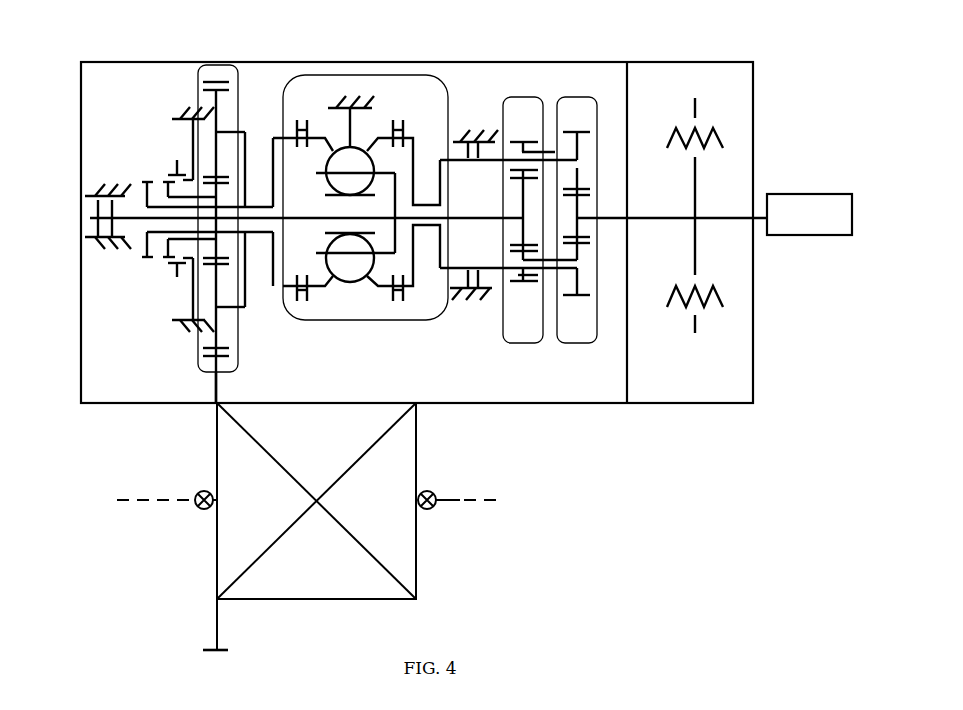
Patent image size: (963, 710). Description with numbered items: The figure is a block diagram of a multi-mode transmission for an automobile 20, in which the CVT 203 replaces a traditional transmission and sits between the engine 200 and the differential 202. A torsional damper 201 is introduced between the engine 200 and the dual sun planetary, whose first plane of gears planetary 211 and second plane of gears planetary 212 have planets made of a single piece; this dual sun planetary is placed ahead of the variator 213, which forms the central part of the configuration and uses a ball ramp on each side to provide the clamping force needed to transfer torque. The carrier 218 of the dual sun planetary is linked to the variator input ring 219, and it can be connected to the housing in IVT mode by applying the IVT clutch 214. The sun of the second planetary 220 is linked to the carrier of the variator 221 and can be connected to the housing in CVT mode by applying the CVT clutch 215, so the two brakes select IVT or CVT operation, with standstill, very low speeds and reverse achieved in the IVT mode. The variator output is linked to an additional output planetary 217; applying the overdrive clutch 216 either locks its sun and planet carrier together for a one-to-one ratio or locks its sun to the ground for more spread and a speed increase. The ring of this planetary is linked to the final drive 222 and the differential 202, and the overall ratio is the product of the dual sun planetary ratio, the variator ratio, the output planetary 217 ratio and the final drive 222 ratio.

The automobile 20 is at (617, 530).
The engine 200 is at (838, 193).
The torsional damper 201 is at (727, 61).
The differential 202 is at (294, 601).
The CVT 203 is at (376, 188).
The first plane of gears planetary 211 is at (557, 110).
The second plane of gears planetary 212 is at (502, 104).
The variator 213 is at (284, 104).
The IVT clutch 214 is at (463, 136).
The CVT clutch 215 is at (82, 216).
The overdrive clutch 216 is at (178, 160).
The output planetary 217 is at (198, 362).
The carrier of the dual sun planetary 218 is at (495, 162).
The variator input ring 219 is at (376, 140).
The sun of the second planetary 220 is at (524, 229).
The carrier of the variator 221 is at (397, 243).
The final drive 222 is at (220, 388).